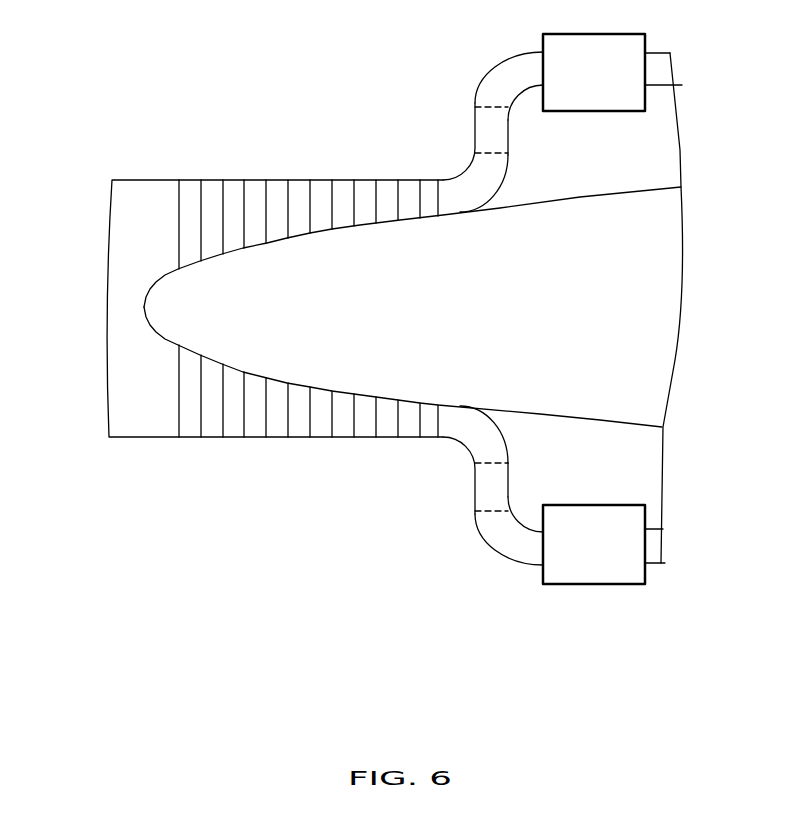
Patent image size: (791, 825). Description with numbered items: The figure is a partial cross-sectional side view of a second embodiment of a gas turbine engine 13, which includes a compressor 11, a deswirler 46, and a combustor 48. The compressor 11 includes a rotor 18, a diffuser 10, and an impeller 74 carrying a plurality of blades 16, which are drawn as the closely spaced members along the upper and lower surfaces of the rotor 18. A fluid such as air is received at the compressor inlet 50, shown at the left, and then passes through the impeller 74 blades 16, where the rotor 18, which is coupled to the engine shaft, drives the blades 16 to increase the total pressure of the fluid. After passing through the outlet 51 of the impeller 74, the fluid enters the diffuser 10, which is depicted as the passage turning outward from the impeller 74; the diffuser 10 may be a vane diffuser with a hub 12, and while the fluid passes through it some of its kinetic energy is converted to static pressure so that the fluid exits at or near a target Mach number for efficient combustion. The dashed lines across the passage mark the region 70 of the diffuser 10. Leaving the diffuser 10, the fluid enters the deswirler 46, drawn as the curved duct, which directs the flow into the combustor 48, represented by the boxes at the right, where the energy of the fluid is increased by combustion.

The radial diffuser 10 is at (480, 121).
The compressor 11 is at (152, 437).
The hub 12 is at (508, 145).
The gas turbine engine 13 is at (455, 657).
The blades 16 is at (223, 200).
The rotor 18 is at (412, 307).
The deswirler 46 is at (520, 72).
The combustor 48 is at (584, 84).
The compressor inlet 50 is at (80, 328).
The outlet 51 is at (490, 172).
The passage 70 is at (475, 147).
The impeller 74 is at (455, 208).